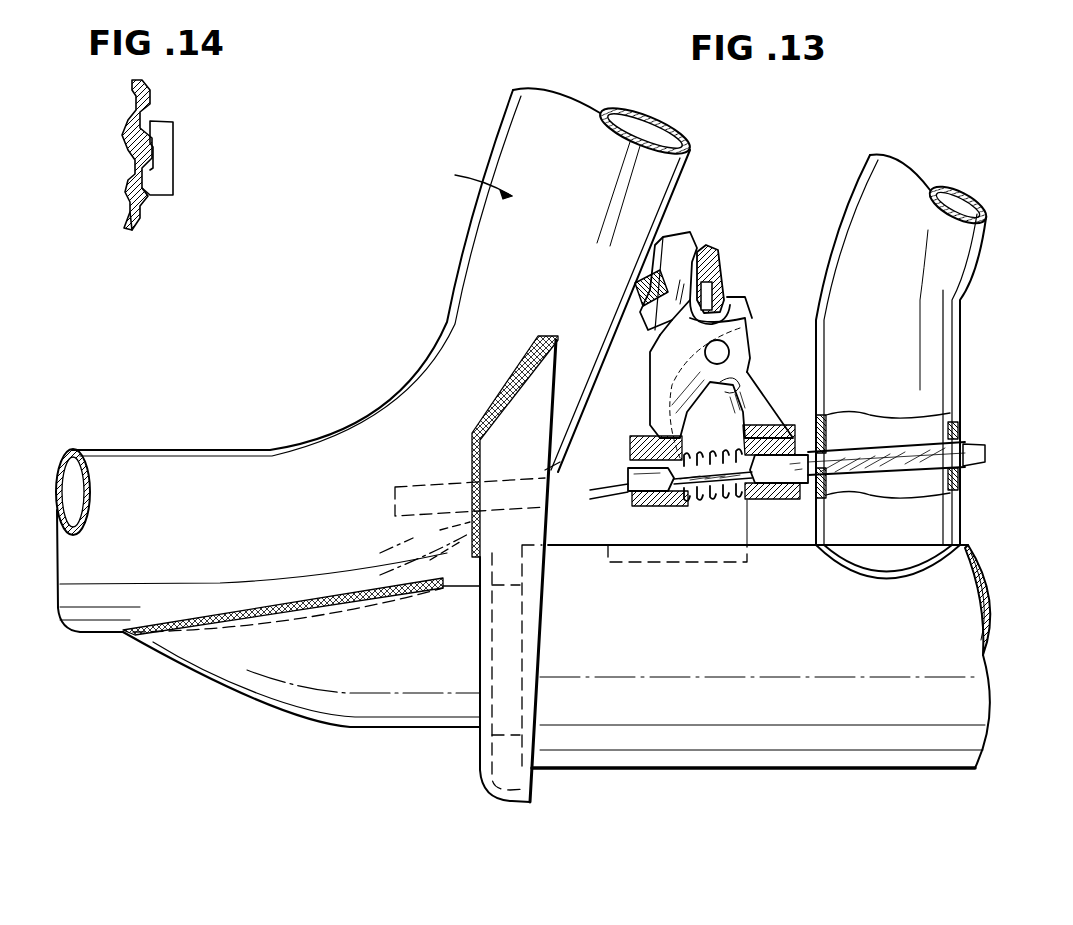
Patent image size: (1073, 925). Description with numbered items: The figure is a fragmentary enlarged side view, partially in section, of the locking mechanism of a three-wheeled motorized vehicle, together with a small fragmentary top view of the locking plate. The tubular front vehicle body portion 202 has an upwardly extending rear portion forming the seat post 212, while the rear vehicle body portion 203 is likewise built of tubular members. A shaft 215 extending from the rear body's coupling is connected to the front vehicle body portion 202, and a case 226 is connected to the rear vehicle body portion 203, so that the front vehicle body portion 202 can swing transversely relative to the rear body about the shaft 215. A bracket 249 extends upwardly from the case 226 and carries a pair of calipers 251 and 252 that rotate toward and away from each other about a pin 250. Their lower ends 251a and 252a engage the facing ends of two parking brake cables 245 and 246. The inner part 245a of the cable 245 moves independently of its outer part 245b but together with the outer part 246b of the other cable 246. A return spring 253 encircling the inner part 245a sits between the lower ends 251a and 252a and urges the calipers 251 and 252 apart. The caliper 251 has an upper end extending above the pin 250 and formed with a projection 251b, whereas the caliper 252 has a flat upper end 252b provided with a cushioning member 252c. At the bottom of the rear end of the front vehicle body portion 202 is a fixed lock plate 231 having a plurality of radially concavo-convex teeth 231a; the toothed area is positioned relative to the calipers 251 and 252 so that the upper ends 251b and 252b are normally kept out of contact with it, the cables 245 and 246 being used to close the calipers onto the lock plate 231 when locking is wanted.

In FIG. 13, the front vehicle body portion 202 is at (455, 186).
In FIG. 13, the rear vehicle body portion 203 is at (846, 192).
In FIG. 13, the seat post 212 is at (512, 136).
In FIG. 13, the shaft 215 is at (363, 723).
In FIG. 13, the case 226 is at (708, 752).
In FIG. 14, the lock plate 231 is at (124, 176).
In FIG. 13, the lock plate 231 is at (686, 240).
In FIG. 14, the teeth 231a is at (126, 208).
In FIG. 13, the teeth 231a is at (672, 313).
In FIG. 13, the parking brake cable 245 is at (596, 498).
In FIG. 13, the inner part of cable 245a is at (738, 500).
In FIG. 13, the outer part of cable 245b is at (556, 462).
In FIG. 13, the parking brake cable 246 is at (857, 462).
In FIG. 13, the outer part of cable 246b is at (917, 462).
In FIG. 13, the bracket 249 is at (668, 562).
In FIG. 13, the pin 250 is at (722, 352).
In FIG. 13, the caliper 251 is at (670, 392).
In FIG. 13, the lower end of caliper 251a is at (645, 500).
In FIG. 14, the projection 251b is at (173, 136).
In FIG. 13, the projection 251b is at (737, 318).
In FIG. 13, the caliper 252 is at (748, 406).
In FIG. 13, the lower end of caliper 252a is at (765, 500).
In FIG. 13, the flat upper end 252b is at (706, 247).
In FIG. 13, the cushioning member 252c is at (720, 268).
In FIG. 13, the return spring 253 is at (704, 498).